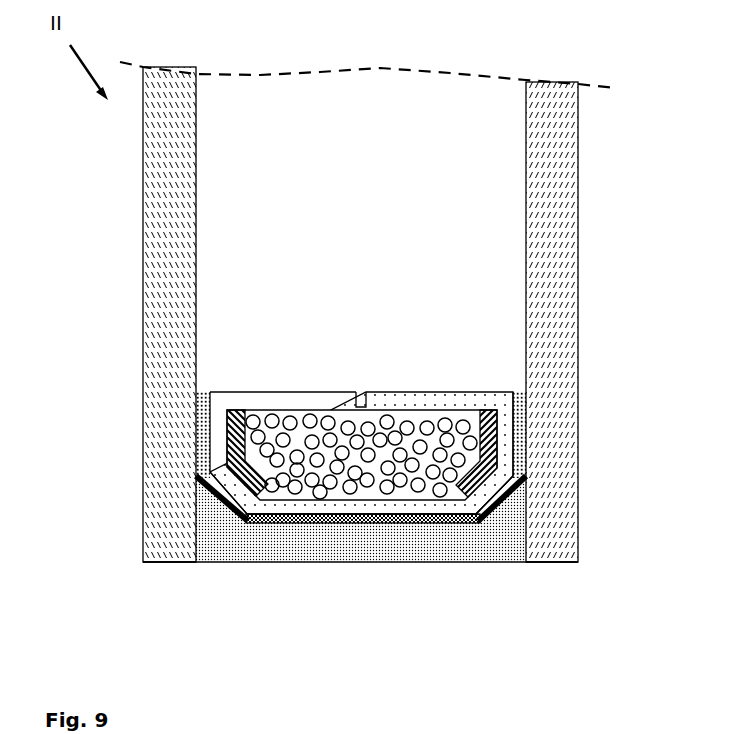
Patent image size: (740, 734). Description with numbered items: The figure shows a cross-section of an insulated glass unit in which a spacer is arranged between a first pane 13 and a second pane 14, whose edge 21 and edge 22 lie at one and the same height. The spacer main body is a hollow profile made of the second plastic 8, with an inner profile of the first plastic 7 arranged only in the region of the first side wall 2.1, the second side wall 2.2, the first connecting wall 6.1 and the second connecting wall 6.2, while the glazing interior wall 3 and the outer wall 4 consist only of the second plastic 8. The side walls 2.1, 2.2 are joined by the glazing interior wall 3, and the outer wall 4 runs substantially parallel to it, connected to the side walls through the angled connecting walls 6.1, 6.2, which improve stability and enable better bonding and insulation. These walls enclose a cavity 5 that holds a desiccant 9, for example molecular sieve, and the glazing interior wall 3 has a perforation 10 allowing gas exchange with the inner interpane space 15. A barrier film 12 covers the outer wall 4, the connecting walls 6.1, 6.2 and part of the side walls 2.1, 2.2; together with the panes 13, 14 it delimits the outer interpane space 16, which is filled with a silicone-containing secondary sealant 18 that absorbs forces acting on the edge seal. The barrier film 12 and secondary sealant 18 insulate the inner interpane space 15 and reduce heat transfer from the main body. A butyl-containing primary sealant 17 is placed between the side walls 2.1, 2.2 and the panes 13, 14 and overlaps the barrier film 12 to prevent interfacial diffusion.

The first side wall 2.1 is at (207, 418).
The second side wall 2.2 is at (522, 420).
The glazing interior wall 3 is at (410, 392).
The outer wall 4 is at (272, 525).
The cavity 5 is at (301, 433).
The first connecting wall 6.1 is at (228, 505).
The second connecting wall 6.2 is at (498, 497).
The first plastic 7 is at (237, 418).
The second plastic 8 is at (328, 513).
The desiccant 9 is at (445, 425).
The perforation 10 is at (362, 395).
The barrier film 12 is at (487, 505).
The first pane 13 is at (157, 272).
The second pane 14 is at (562, 278).
The inner interpane space 15 is at (313, 137).
The outer interpane space 16 is at (255, 547).
The primary sealant 17 is at (200, 432).
The secondary sealant 18 is at (407, 530).
The edge of the first pane 21 is at (155, 562).
The edge of the second pane 22 is at (555, 562).